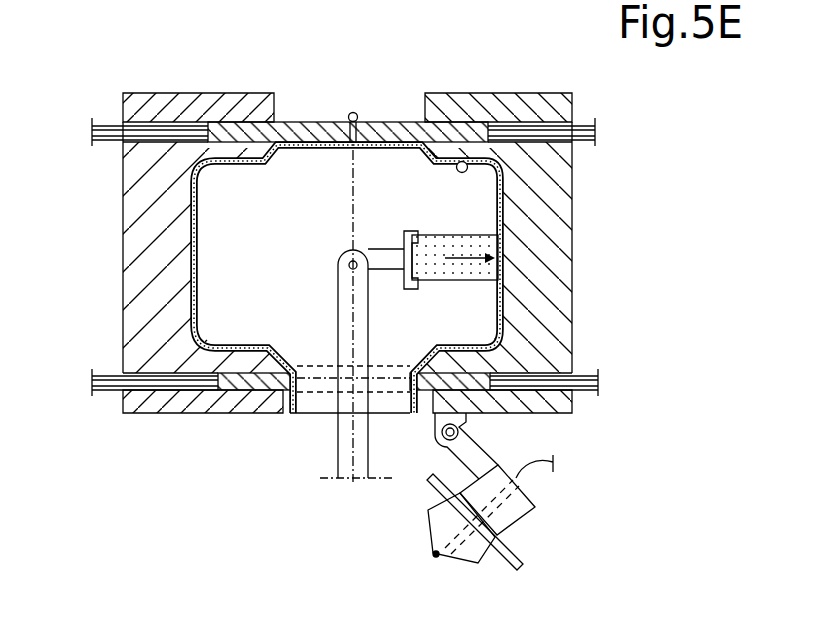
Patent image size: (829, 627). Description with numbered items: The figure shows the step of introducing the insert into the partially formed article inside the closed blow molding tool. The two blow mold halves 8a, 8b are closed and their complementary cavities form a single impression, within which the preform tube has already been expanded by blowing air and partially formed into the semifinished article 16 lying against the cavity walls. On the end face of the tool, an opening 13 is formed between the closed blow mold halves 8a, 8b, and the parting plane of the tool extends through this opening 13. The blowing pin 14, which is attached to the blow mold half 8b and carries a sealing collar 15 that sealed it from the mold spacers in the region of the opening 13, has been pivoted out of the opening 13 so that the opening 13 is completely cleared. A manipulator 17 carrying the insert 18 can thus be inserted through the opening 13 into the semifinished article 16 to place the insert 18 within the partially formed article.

The blow mold half 8a is at (540, 246).
The blow mold half 8b is at (148, 238).
The opening 13 is at (313, 414).
The blowing pin 14 is at (520, 500).
The sealing collar 15 is at (521, 560).
The semifinished article 16 is at (466, 162).
The manipulator 17 is at (362, 319).
The insert 18 is at (458, 238).